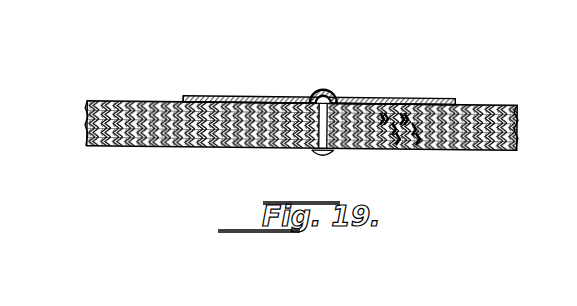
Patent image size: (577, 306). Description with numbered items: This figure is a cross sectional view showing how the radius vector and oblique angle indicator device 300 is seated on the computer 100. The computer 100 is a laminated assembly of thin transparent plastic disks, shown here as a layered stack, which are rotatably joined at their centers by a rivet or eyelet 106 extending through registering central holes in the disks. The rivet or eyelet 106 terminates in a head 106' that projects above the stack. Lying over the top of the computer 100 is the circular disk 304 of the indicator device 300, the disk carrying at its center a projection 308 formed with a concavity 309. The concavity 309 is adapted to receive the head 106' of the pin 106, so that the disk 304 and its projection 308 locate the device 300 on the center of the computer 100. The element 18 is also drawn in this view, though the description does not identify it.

The computer 100 is at (172, 151).
The metal strip 18 is at (409, 101).
The radius vector and oblique angle indicator device 300 is at (442, 96).
The circular disk 304 is at (213, 97).
The rivet or eyelet 106 is at (342, 147).
The head 106' is at (296, 72).
The projection 308 is at (321, 95).
The concavity 309 is at (331, 100).